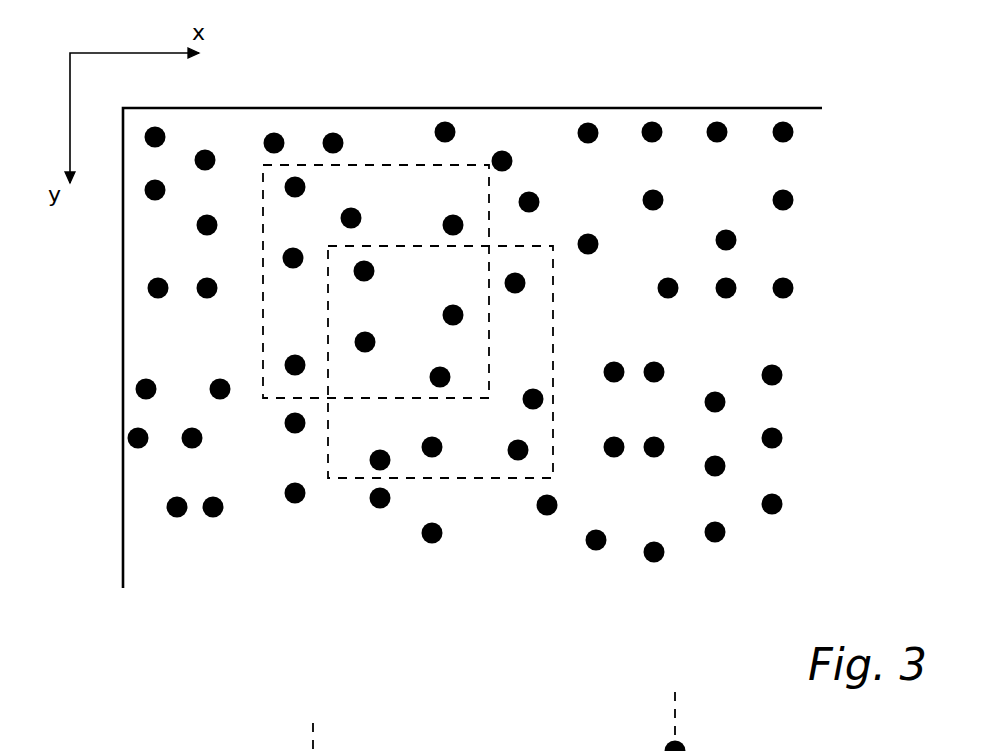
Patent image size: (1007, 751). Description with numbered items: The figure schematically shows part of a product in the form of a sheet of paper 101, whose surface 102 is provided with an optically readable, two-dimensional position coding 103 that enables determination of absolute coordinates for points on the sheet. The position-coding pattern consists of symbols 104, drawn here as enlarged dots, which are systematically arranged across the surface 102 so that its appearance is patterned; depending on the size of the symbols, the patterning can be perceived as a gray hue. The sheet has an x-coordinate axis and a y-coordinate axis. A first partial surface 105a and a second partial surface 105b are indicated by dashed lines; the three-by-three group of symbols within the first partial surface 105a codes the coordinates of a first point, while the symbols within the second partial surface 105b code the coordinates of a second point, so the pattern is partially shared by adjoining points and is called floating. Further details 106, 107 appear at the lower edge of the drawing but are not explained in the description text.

The sheet of paper 101 is at (690, 100).
The surface 102 is at (279, 589).
The position coding 103 is at (830, 363).
The symbols 104 is at (675, 574).
The first partial surface 105a is at (397, 165).
The second partial surface 105b is at (538, 257).
The grid line 106 is at (451, 750).
The grid point dot 107 is at (683, 742).